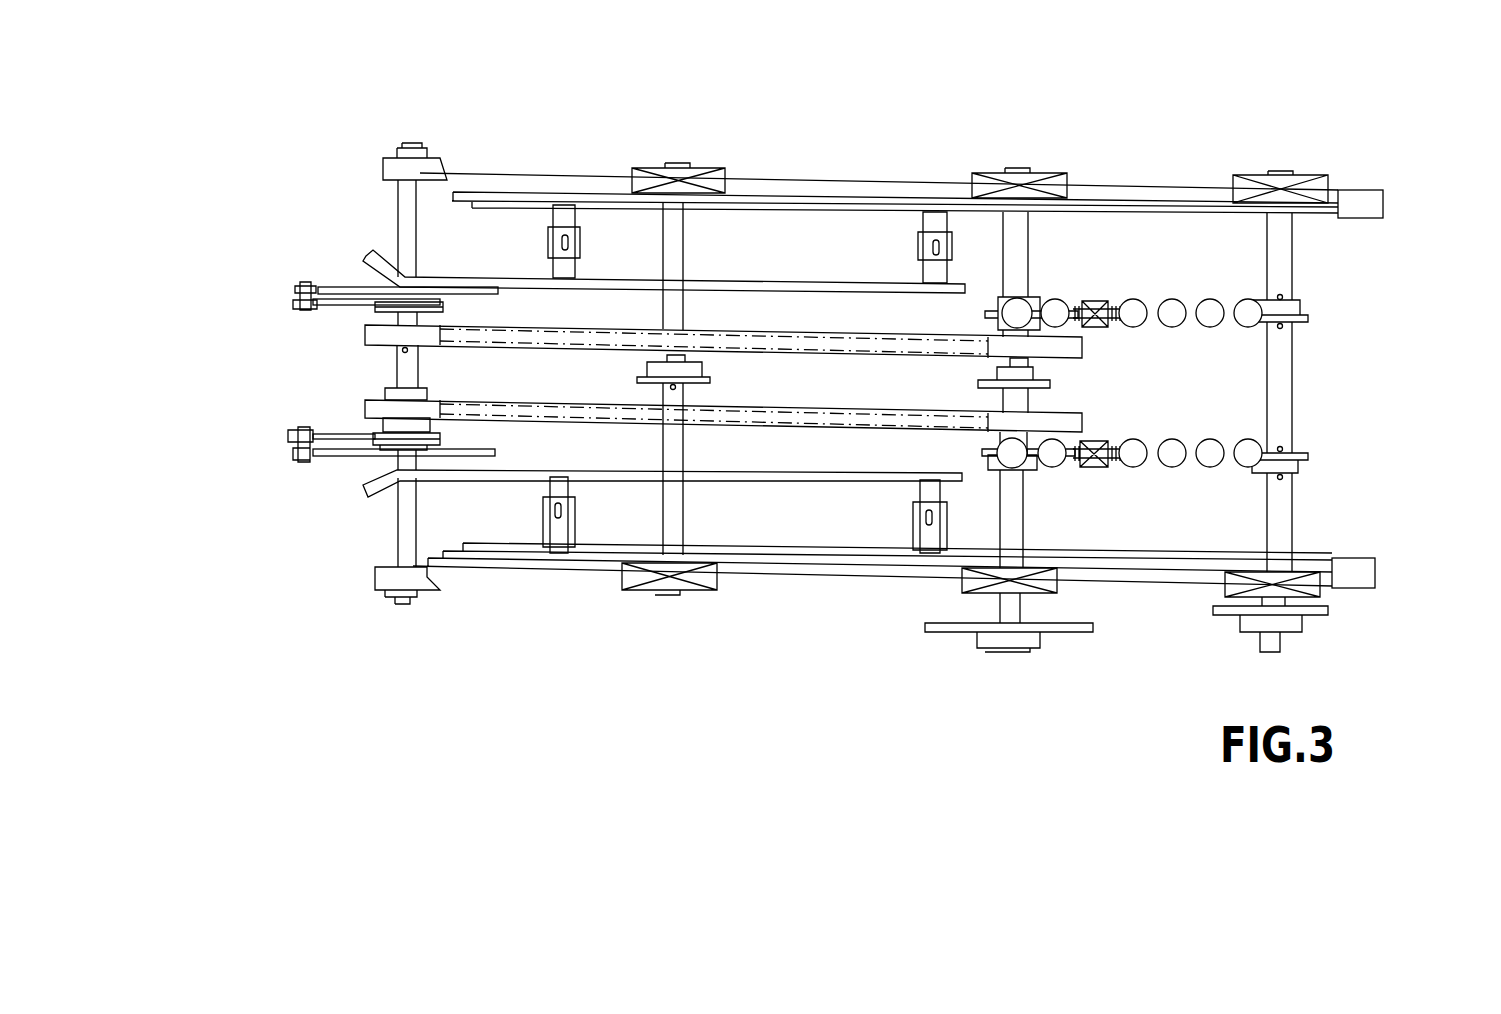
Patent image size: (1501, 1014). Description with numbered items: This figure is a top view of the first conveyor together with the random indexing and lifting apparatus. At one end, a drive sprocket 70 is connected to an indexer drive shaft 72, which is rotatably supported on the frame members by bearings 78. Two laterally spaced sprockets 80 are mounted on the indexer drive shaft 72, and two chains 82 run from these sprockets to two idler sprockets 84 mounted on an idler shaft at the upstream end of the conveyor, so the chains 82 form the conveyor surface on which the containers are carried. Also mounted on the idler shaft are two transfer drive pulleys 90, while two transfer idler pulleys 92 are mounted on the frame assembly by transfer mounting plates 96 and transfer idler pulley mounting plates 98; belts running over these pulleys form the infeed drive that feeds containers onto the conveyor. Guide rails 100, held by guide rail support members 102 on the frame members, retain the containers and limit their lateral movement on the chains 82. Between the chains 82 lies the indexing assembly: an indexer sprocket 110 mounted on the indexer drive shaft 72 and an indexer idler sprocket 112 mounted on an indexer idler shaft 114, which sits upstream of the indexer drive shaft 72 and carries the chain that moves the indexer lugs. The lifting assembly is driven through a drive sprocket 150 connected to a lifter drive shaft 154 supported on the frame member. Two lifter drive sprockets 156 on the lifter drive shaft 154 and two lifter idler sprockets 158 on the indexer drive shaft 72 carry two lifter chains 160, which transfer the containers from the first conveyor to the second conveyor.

The drive sprocket 70 is at (1027, 638).
The indexer drive shaft 72 is at (1015, 248).
The bearings 78 is at (1000, 473).
The sprockets 80 is at (1054, 446).
The chains 82 is at (747, 343).
The idler sprockets 84 is at (380, 398).
The transfer drive pulleys 90 is at (378, 300).
The transfer idler pulleys 92 is at (293, 297).
The transfer mounting plates 96 is at (345, 289).
The transfer idler pulley mounting plates 98 is at (357, 441).
The guide rails 100 is at (368, 255).
The guide rail support members 102 is at (562, 215).
The indexer sprocket 110 is at (993, 367).
The indexer idler sprocket 112 is at (693, 390).
The indexer idler shaft 114 is at (678, 238).
The drive sprocket 150 is at (1302, 620).
The lifter drive shaft 154 is at (1278, 270).
The lifter drive sprockets 156 is at (1310, 455).
The lifter idler sprockets 158 is at (1043, 303).
The lifter chains 160 is at (1115, 308).